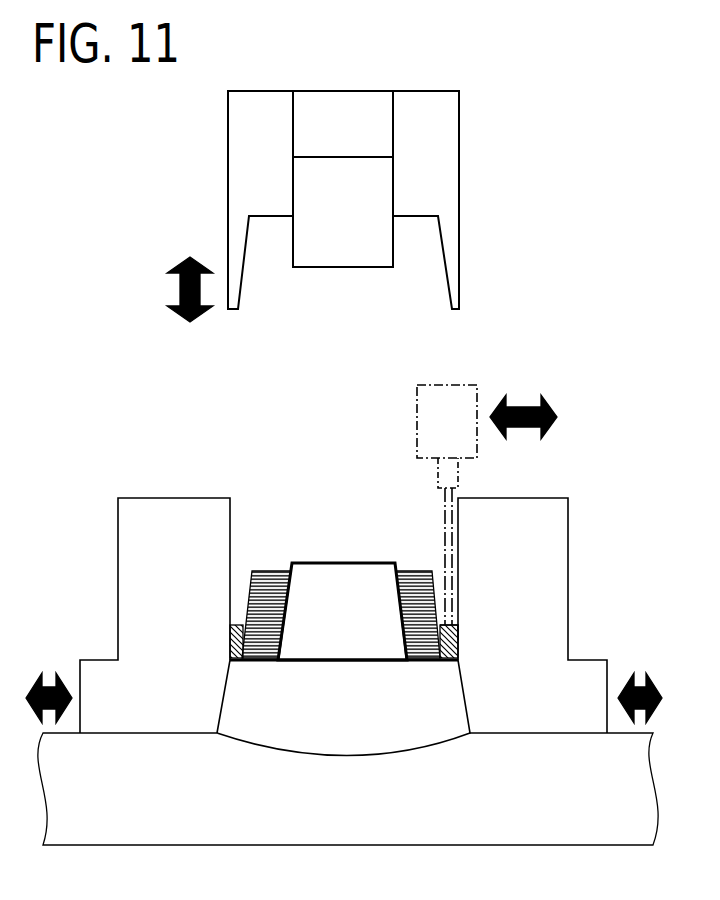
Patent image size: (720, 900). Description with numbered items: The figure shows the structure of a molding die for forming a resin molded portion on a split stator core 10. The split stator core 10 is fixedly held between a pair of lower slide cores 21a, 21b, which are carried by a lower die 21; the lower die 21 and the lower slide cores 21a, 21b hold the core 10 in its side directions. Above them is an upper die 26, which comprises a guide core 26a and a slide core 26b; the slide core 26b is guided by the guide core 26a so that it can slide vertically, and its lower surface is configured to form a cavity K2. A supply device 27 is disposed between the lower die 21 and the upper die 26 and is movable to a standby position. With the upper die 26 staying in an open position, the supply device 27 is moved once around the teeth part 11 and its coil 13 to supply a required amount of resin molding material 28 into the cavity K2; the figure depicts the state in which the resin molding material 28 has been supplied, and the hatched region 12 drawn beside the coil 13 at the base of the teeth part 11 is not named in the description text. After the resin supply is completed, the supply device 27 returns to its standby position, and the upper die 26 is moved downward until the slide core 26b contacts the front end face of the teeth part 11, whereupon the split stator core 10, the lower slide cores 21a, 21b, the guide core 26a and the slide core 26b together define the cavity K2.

The upper die 26 is at (411, 213).
The guide core 26a is at (438, 135).
The slide core 26b is at (365, 192).
The cavity K2 is at (443, 277).
The supply device 27 is at (463, 436).
The lower die 21 is at (118, 812).
The lower slide core 21a is at (159, 562).
The lower slide core 21b is at (492, 561).
The split stator core 10 is at (333, 702).
The teeth part 11 is at (322, 577).
The coil 13 is at (410, 573).
The resist film 12 is at (457, 653).
The resin molding material 28 is at (457, 627).